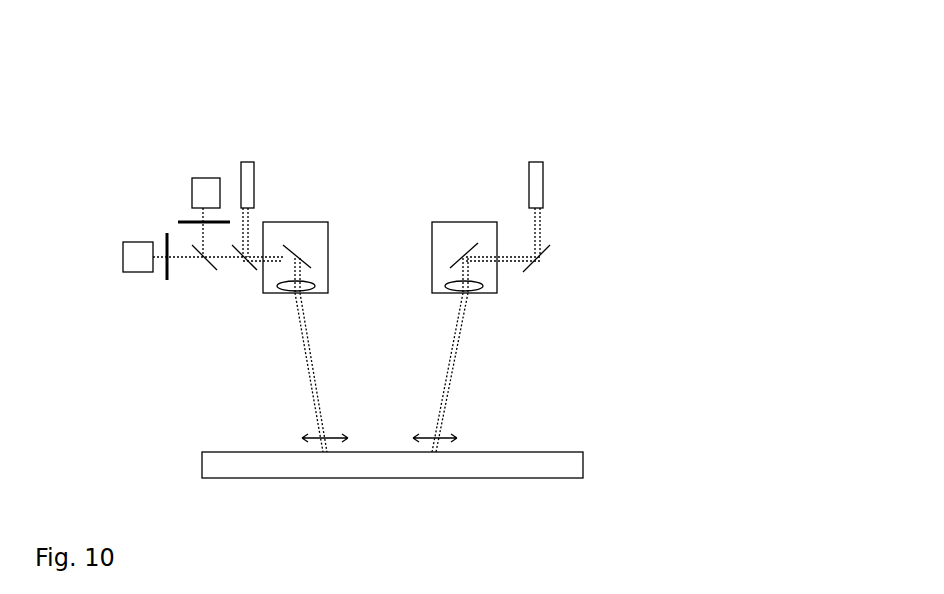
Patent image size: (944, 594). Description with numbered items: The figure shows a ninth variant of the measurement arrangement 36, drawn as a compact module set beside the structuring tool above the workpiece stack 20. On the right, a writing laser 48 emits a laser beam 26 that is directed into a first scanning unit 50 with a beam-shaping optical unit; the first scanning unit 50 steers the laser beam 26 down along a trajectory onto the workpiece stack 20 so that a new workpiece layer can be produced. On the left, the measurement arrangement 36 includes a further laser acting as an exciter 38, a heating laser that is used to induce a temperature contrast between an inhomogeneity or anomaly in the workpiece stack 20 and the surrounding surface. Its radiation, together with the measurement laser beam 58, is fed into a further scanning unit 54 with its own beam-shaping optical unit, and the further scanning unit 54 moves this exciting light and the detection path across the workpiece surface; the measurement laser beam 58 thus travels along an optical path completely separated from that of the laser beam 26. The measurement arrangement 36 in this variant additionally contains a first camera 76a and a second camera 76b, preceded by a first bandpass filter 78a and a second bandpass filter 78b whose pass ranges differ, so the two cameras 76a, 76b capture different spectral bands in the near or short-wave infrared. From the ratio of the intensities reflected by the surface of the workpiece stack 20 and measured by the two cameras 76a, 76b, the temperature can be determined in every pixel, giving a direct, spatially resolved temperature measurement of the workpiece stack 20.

The measurement arrangement 36 is at (708, 106).
The workpiece stack 20 is at (528, 452).
The first camera 76a is at (123, 257).
The first bandpass filter 78a is at (165, 280).
The second camera 76b is at (203, 178).
The second bandpass filter 78b is at (180, 221).
The exciter (heating laser) 38 is at (248, 162).
The further scanning unit 54 is at (305, 232).
The measurement laser beam 58 is at (306, 368).
The first scanning unit 50 is at (488, 273).
The laser beam 26 is at (462, 352).
The laser (writing laser) 48 is at (536, 162).